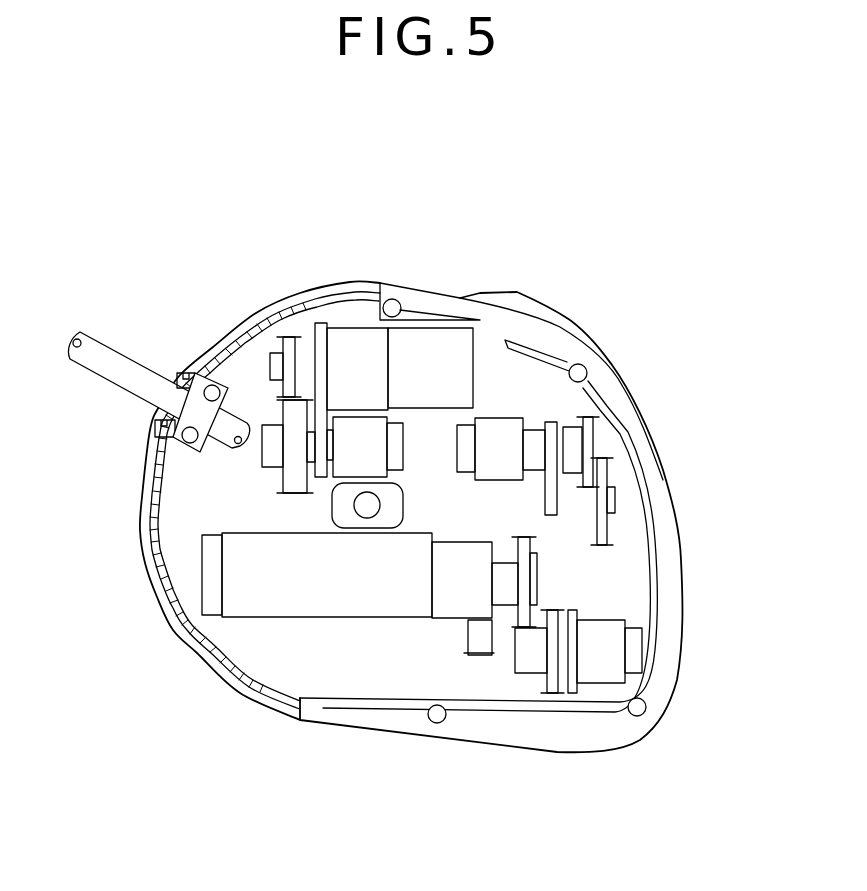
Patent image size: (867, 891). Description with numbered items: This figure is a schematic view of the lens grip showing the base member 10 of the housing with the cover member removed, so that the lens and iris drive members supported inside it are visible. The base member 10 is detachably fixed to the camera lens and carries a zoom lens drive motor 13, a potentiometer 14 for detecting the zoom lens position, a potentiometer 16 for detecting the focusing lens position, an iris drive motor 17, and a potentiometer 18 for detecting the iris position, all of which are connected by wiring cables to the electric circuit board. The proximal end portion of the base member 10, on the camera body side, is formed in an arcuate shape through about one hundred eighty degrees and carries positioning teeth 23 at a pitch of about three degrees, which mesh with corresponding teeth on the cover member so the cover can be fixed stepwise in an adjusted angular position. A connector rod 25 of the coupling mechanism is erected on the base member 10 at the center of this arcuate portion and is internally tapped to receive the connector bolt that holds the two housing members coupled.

The base member 10 is at (625, 383).
The zoom lens drive motor 13 is at (278, 603).
The potentiometer for detection of the zoom lens position 14 is at (598, 675).
The potentiometer for detection of the focusing lens position 16 is at (570, 447).
The iris drive motor 17 is at (437, 348).
The potentiometer for detection of the iris position 18 is at (355, 430).
The positioning teeth 23 is at (156, 572).
The connector rod 25 is at (340, 513).